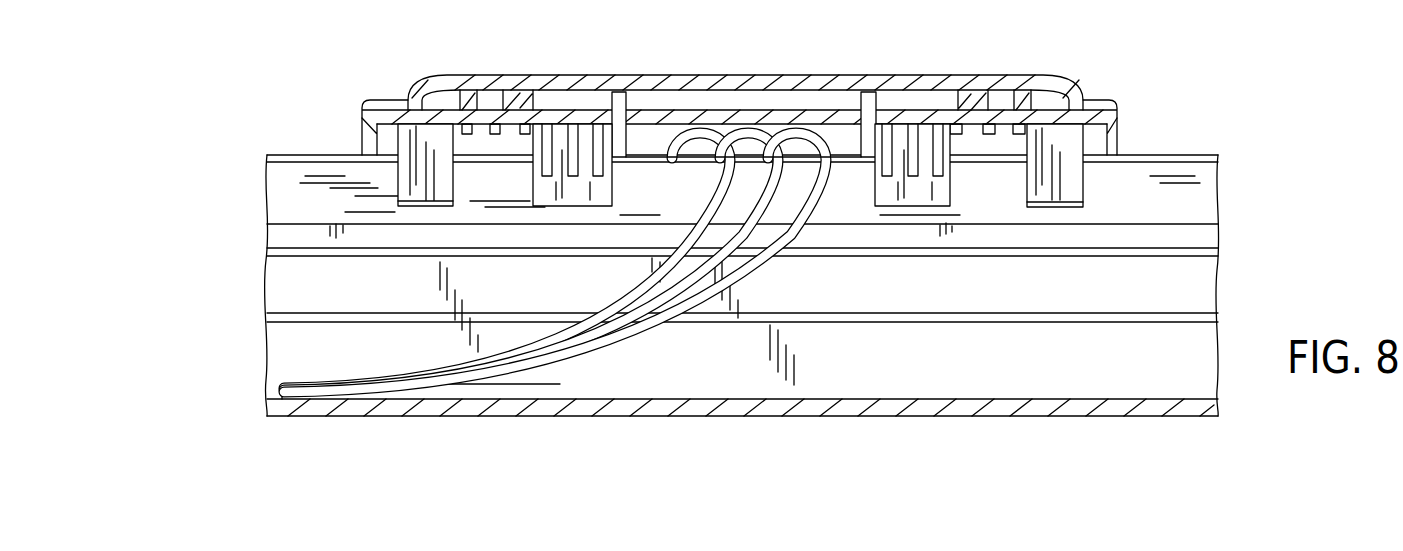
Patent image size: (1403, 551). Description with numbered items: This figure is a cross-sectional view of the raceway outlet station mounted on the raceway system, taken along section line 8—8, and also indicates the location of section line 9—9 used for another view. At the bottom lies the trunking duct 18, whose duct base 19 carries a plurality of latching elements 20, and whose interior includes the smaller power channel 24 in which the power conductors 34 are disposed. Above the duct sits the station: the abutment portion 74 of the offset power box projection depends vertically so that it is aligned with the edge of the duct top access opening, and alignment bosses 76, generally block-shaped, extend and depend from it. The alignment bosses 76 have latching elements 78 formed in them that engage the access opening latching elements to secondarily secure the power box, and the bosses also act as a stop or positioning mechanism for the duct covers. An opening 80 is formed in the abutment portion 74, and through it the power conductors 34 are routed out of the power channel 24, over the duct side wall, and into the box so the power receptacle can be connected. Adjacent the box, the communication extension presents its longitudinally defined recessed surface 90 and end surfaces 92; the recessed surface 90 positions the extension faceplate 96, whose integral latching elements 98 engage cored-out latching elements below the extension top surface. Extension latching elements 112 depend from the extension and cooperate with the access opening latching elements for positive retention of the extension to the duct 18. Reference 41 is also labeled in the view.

The trunking duct 18 is at (1190, 295).
The duct base 19 is at (1053, 417).
The latching elements 20 is at (300, 203).
The power channel 24 is at (590, 6).
The power conductors 34 is at (662, 328).
The cover 41 is at (381, 0).
The abutment portion 74 is at (617, 143).
The alignment bosses 76 is at (420, 143).
The latching elements 78 is at (443, 177).
The opening 80 is at (645, 140).
The recessed surface 90 is at (383, 103).
The end surfaces 92 is at (360, 145).
The extension faceplate 96 is at (767, 80).
The integral latching elements 98 is at (480, 146).
The extension latching elements 112 is at (585, 133).
The section line 8 is at (805, 18).
The section line 9 is at (945, 18).